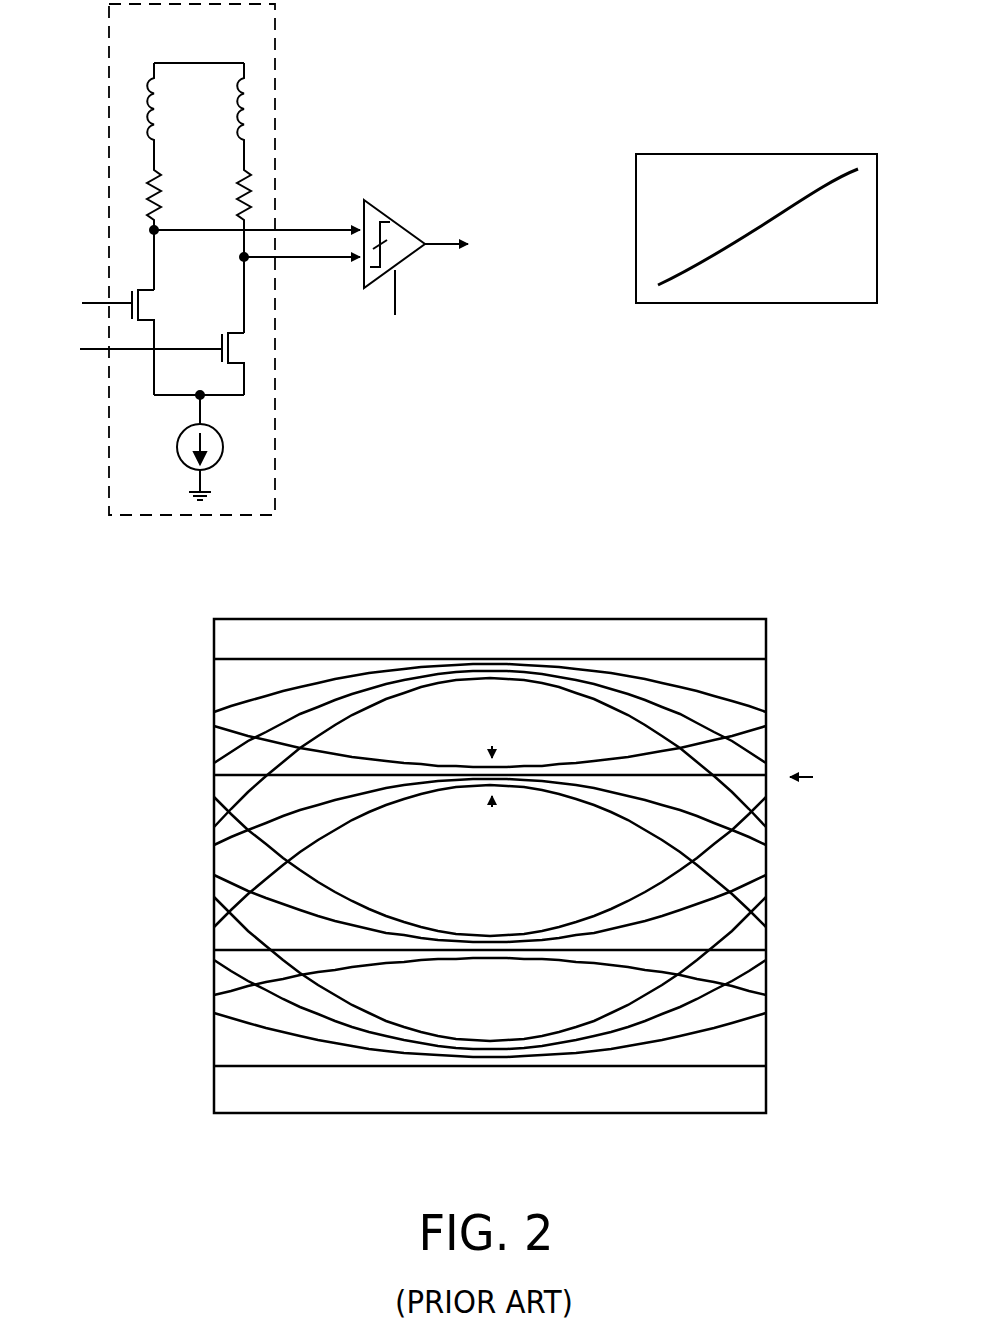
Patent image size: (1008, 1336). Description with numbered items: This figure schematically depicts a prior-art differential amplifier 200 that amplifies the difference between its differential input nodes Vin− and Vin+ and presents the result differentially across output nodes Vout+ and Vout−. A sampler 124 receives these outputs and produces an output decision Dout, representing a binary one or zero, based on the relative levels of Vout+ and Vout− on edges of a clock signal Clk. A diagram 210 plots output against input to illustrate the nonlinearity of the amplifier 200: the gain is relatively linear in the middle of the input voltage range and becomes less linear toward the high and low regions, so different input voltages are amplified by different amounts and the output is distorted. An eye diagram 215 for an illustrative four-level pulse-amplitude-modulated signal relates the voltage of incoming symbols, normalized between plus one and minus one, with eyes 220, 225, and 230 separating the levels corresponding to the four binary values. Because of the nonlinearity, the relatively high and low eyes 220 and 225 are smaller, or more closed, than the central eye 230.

The differential amplifier 200 is at (173, 31).
The sampler 124 is at (386, 215).
The diagram 210 is at (791, 276).
The eye diagram 215 is at (701, 618).
The high eye 220 is at (473, 731).
The central eye 230 is at (473, 869).
The low eye 225 is at (473, 1014).